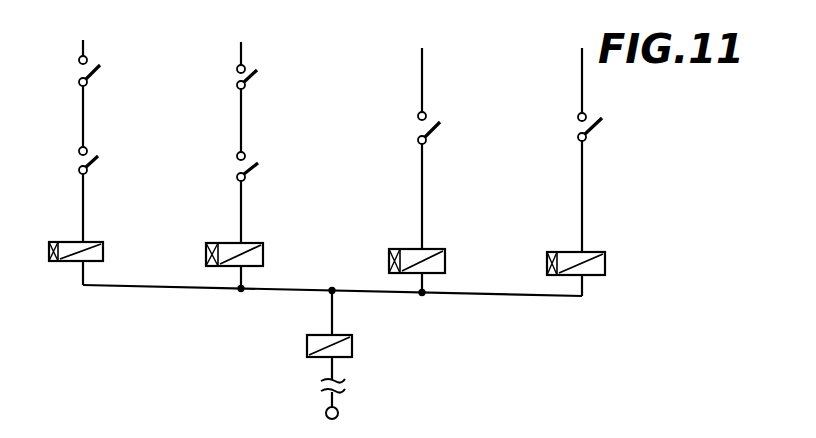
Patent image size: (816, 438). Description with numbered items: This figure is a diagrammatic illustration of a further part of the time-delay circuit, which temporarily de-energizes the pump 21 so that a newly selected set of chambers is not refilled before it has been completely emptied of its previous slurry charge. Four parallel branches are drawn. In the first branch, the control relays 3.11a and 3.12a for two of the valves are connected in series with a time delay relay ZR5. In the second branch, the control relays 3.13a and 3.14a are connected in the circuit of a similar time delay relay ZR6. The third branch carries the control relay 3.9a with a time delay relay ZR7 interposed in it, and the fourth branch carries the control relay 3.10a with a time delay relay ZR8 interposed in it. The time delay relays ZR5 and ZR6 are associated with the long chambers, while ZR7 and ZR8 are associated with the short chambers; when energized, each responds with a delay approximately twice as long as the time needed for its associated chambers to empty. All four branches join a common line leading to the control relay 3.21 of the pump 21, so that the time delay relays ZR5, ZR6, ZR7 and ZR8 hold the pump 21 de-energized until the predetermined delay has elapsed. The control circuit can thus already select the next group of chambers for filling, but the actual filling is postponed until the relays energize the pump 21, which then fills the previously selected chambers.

The control relay 3.11a is at (95, 80).
The control relay 3.12a is at (93, 166).
The control relay 3.13a is at (250, 82).
The control relay 3.14a is at (250, 173).
The control relay 3.9a is at (430, 137).
The control relay 3.10a is at (592, 133).
The time delay relay ZR5 is at (112, 260).
The time delay relay ZR6 is at (265, 261).
The time delay relay ZR7 is at (472, 263).
The time delay relay ZR8 is at (637, 265).
The control relay of the pump 3.21 is at (355, 352).
The pump 21 is at (338, 412).